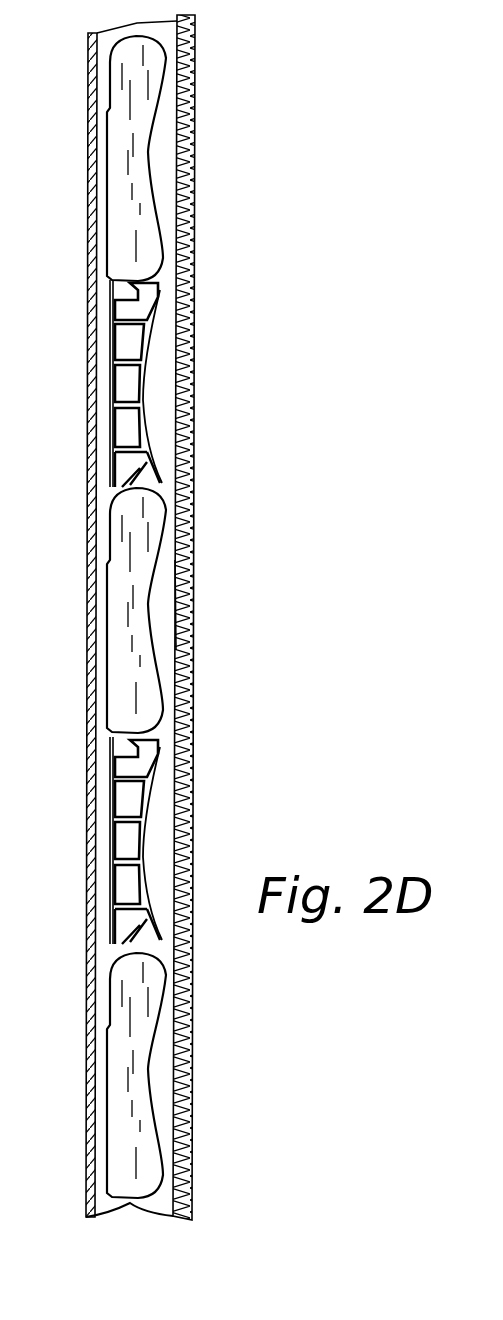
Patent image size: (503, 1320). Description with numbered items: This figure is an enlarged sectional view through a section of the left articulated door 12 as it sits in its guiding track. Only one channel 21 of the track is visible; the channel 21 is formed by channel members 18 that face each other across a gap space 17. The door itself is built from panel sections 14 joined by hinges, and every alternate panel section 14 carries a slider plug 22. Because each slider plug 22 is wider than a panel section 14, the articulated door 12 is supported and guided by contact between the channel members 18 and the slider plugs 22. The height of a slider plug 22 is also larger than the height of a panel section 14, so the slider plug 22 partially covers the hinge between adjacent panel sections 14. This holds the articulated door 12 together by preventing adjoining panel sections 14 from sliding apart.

The articulated door 12 is at (130, 1220).
The panel section 14 is at (150, 386).
The gap space 17 is at (160, 333).
The channel member 18 is at (183, 437).
The channel 21 is at (175, 605).
The slider plug 22 is at (112, 163).